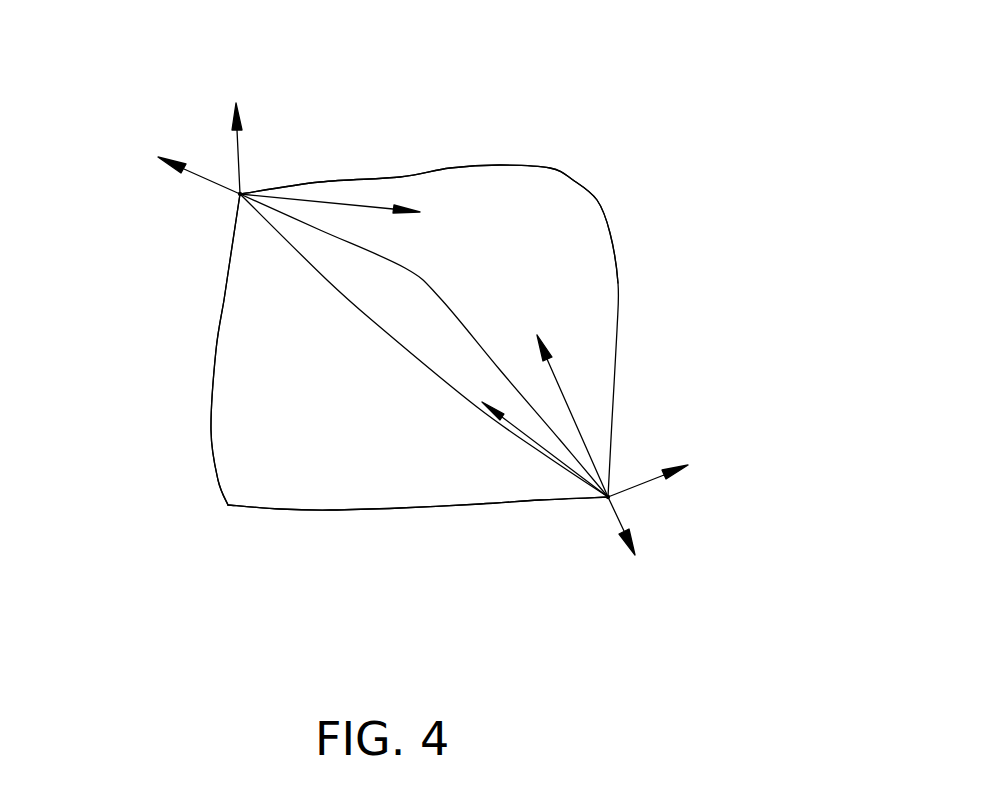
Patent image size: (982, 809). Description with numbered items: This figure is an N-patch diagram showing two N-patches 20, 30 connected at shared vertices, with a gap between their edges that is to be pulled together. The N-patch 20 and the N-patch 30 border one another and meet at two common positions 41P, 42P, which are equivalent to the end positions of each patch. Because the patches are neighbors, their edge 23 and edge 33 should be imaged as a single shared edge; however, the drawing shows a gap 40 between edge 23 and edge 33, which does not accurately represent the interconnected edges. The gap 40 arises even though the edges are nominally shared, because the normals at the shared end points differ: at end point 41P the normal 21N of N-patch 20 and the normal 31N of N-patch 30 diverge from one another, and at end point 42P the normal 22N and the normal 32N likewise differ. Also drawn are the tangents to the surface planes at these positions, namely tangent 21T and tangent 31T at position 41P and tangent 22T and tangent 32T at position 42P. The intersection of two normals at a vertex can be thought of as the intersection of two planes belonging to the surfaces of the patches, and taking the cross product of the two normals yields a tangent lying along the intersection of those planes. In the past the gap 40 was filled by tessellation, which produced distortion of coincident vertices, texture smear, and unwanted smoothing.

The N-patch 20 is at (662, 226).
The edge 23 is at (405, 268).
The N-patch 30 is at (160, 491).
The tangent 31T is at (218, 342).
The edge 33 is at (477, 407).
The gap 40 is at (456, 350).
The position 41P is at (240, 194).
The position 42P is at (608, 497).
The normal 21N is at (242, 150).
The tangent 21T is at (343, 203).
The normal 31N is at (204, 177).
The tangent 22T is at (580, 443).
The normal 22N is at (650, 478).
The normal 32N is at (623, 518).
The tangent 32T is at (548, 452).